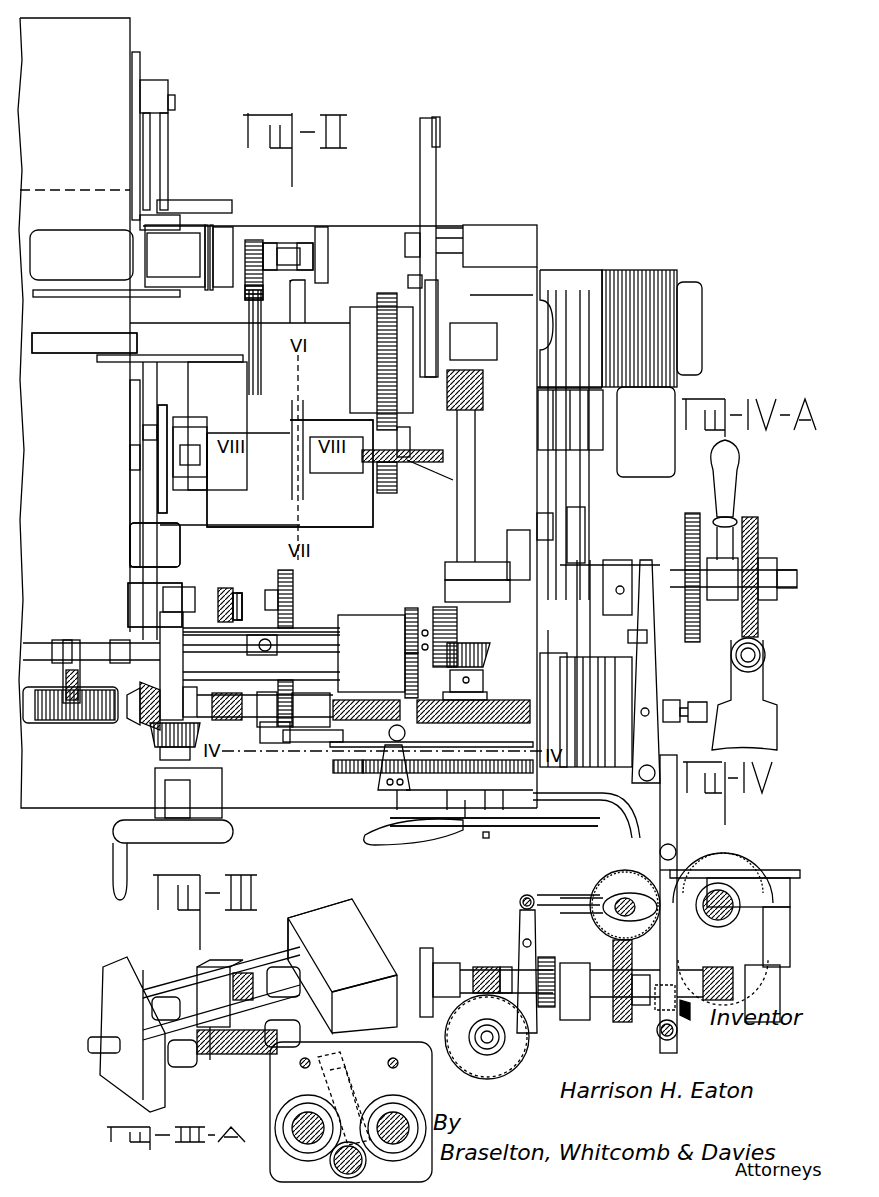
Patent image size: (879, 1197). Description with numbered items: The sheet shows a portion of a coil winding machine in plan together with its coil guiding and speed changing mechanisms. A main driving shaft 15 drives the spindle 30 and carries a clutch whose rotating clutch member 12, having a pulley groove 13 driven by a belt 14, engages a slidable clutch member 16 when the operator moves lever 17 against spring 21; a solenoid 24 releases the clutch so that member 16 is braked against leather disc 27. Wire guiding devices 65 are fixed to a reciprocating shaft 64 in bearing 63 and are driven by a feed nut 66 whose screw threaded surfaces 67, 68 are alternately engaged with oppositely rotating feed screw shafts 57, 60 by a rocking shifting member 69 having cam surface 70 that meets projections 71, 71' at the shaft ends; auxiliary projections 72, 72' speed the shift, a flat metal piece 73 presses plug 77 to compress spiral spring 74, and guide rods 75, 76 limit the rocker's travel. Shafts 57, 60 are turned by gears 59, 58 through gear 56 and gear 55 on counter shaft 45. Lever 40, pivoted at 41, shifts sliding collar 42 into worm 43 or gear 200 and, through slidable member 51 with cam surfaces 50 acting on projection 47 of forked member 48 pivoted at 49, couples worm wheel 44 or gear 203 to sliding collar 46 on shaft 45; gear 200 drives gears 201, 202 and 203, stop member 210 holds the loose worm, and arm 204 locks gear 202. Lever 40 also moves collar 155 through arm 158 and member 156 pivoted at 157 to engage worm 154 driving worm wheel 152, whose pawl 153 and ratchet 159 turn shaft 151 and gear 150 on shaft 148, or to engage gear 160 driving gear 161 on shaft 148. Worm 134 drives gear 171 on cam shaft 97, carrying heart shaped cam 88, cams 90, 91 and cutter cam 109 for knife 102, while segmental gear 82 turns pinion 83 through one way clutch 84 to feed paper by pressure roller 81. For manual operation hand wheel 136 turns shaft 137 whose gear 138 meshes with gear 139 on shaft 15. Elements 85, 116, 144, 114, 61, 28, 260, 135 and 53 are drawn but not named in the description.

In FIG. 2, the pressure roller 81 is at (77, 245).
In FIG. 2, the segmental gear 82 is at (262, 280).
In FIG. 2, the pinion 83 is at (252, 240).
In FIG. 2, the one way clutch 84 is at (232, 232).
In FIG. 2, the shaft 85 is at (283, 255).
In FIG. 2, the knife mechanism 102 is at (90, 345).
In FIG. 2, the cam 109 is at (168, 415).
In FIG. 2, the pin 116 is at (152, 432).
In FIG. 2, the collar 144 is at (130, 458).
In FIG. 2, the cam shaft 97 is at (195, 455).
In FIG. 2, the heart shaped cam 88 is at (272, 500).
In FIG. 2, the block 114 is at (150, 548).
In FIG. 2, the shaft 148 is at (130, 605).
In FIG. 2, the wire guiding devices 65 is at (75, 640).
In FIG. 2, the reciprocating shaft 64 is at (80, 650).
In FIG. 3, the reciprocating shaft 64 is at (100, 1040).
In FIG. 2, the bearing 63 is at (168, 655).
In FIG. 2, the gear 139 is at (130, 720).
In FIG. 2, the spindle 30 is at (125, 722).
In FIG. 2, the gear 138 is at (160, 745).
In FIG. 2, the shaft 137 is at (190, 768).
In FIG. 2, the hand wheel 136 is at (113, 845).
In FIG. 2, the gear 150 is at (225, 590).
In FIG. 2, the shifting member 69 is at (257, 620).
In FIG. 3, the shifting member 69 is at (205, 978).
In FIG. 3A, the shifting member 69 is at (363, 1055).
In FIG. 2, the gear 161 is at (293, 600).
In FIG. 2, the feed screw threaded shaft 57 is at (330, 625).
In FIG. 3, the feed screw threaded shaft 57 is at (245, 975).
In FIG. 2, the gear box 61 is at (375, 625).
In FIG. 2, the gear 58 is at (408, 628).
In FIG. 2, the gear 59 is at (408, 665).
In FIG. 2, the feed screw threaded shaft 60 is at (297, 690).
In FIG. 3, the feed screw threaded shaft 60 is at (225, 1055).
In FIG. 2, the gear 201 is at (390, 703).
In FIG. 4, the gear 201 is at (618, 880).
In FIG. 2, the arm 204 is at (368, 755).
In FIG. 4, the arm 204 is at (593, 892).
In FIG. 2, the gear 202 is at (363, 773).
In FIG. 2, the lever 17 is at (383, 845).
In FIG. 2, the gear 203 is at (460, 773).
In FIG. 4A, the gear 203 is at (690, 517).
In FIG. 2, the stop 28 is at (487, 837).
In FIG. 2, the plate 260 is at (432, 310).
In FIG. 2, the gear 135 is at (417, 395).
In FIG. 2, the worm 134 is at (478, 408).
In FIG. 2, the counter shaft 45 is at (472, 485).
In FIG. 4A, the counter shaft 45 is at (790, 570).
In FIG. 4, the counter shaft 45 is at (735, 905).
In FIG. 2, the cam 90 is at (297, 405).
In FIG. 2, the cam 91 is at (303, 405).
In FIG. 2, the gear 171 is at (395, 492).
In FIG. 2, the bearing 53 is at (457, 565).
In FIG. 2, the gear 56 is at (441, 607).
In FIG. 2, the gear 55 is at (480, 665).
In FIG. 2, the projection 47 is at (488, 700).
In FIG. 2, the cam surfaces 50 is at (525, 715).
In FIG. 2, the rotating clutch member 12 is at (560, 663).
In FIG. 2, the solenoid 24 is at (535, 550).
In FIG. 2, the belt 14 is at (580, 585).
In FIG. 2, the leather disc 27 is at (620, 660).
In FIG. 2, the spring 21 is at (640, 665).
In FIG. 2, the pulley groove 13 is at (583, 755).
In FIG. 2, the slidable clutch member 16 is at (612, 755).
In FIG. 4A, the worm wheel 44 is at (752, 520).
In FIG. 4, the worm wheel 44 is at (722, 853).
In FIG. 4A, the sliding collar 46 is at (712, 640).
In FIG. 4A, the main driving shaft 15 is at (675, 705).
In FIG. 4, the main driving shaft 15 is at (605, 1000).
In FIG. 4, the lever 40 is at (672, 797).
In FIG. 4, the slidable member 51 is at (725, 873).
In FIG. 4, the forked member 48 is at (782, 870).
In FIG. 4, the pivot 49 is at (780, 870).
In FIG. 4, the worm 43 is at (733, 980).
In FIG. 4, the stop member 210 is at (690, 1010).
In FIG. 4, the pivot 41 is at (665, 1038).
In FIG. 4, the sliding collar 42 is at (660, 1003).
In FIG. 4, the gear 160 is at (600, 985).
In FIG. 4, the gear 200 is at (617, 958).
In FIG. 4, the arm 158 is at (580, 895).
In FIG. 4, the member 156 is at (525, 918).
In FIG. 4, the pivot 157 is at (533, 942).
In FIG. 4, the worm 154 is at (487, 967).
In FIG. 4, the pawl 153 is at (507, 1005).
In FIG. 4, the collar 155 is at (527, 1000).
In FIG. 4, the ratchet 159 is at (503, 1047).
In FIG. 4, the worm wheel 152 is at (487, 1073).
In FIG. 4, the shaft 151 is at (487, 1040).
In FIG. 3, the projection 71' is at (156, 975).
In FIG. 3, the auxiliary projection 72' is at (304, 922).
In FIG. 3, the guide rod 75 is at (292, 945).
In FIG. 3, the guide rod 76 is at (318, 985).
In FIG. 3, the projection 71 is at (312, 1019).
In FIG. 3A, the projection 71 is at (423, 1107).
In FIG. 3, the feed nut 66 is at (222, 1050).
In FIG. 3, the auxiliary projection 72 is at (202, 1067).
In FIG. 3A, the screw threaded surface 68 is at (325, 1095).
In FIG. 3A, the cam surface 70 is at (315, 1140).
In FIG. 3A, the screw threaded surface 67 is at (360, 1105).
In FIG. 3A, the spiral spring 74 is at (368, 1155).
In FIG. 3A, the flat metal piece 73 is at (350, 1053).
In FIG. 3A, the plug 77 is at (345, 1085).